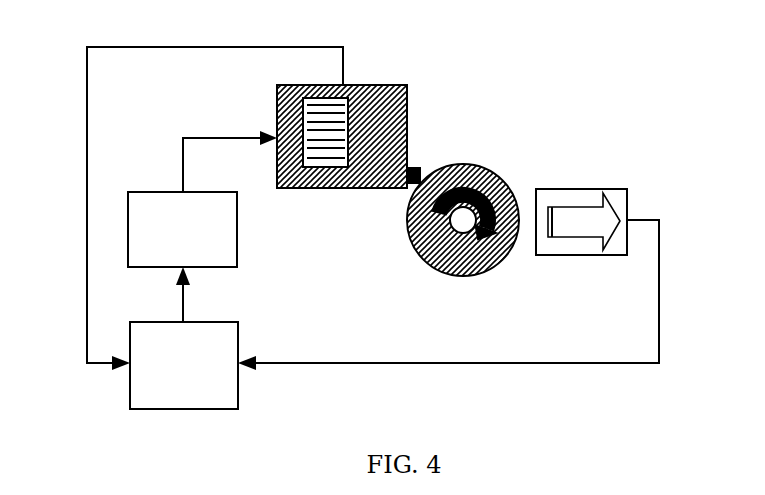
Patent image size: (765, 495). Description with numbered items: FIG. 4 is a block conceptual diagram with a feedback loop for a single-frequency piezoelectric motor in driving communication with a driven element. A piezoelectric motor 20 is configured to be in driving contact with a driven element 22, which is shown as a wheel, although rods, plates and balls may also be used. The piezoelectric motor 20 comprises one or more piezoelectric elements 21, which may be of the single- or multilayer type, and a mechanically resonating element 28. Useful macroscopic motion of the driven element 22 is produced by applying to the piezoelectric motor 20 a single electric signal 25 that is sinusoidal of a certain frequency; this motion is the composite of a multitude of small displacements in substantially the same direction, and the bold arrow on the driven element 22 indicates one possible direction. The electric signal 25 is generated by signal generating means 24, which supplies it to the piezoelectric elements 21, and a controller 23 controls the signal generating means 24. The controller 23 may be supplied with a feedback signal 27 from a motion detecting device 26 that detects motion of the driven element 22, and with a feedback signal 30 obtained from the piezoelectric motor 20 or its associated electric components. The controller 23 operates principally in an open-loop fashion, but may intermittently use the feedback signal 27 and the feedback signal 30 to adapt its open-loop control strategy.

The piezoelectric motor 20 is at (418, 85).
The piezoelectric elements 21 is at (332, 128).
The driven element 22 is at (490, 157).
The controller 23 is at (184, 338).
The signal generating means 24 is at (182, 229).
The electric signal 25 is at (207, 130).
The motion detecting device 26 is at (582, 187).
The feedback signal 27 is at (477, 362).
The mechanically resonating element 28 is at (407, 153).
The feedback signal 30 is at (78, 145).